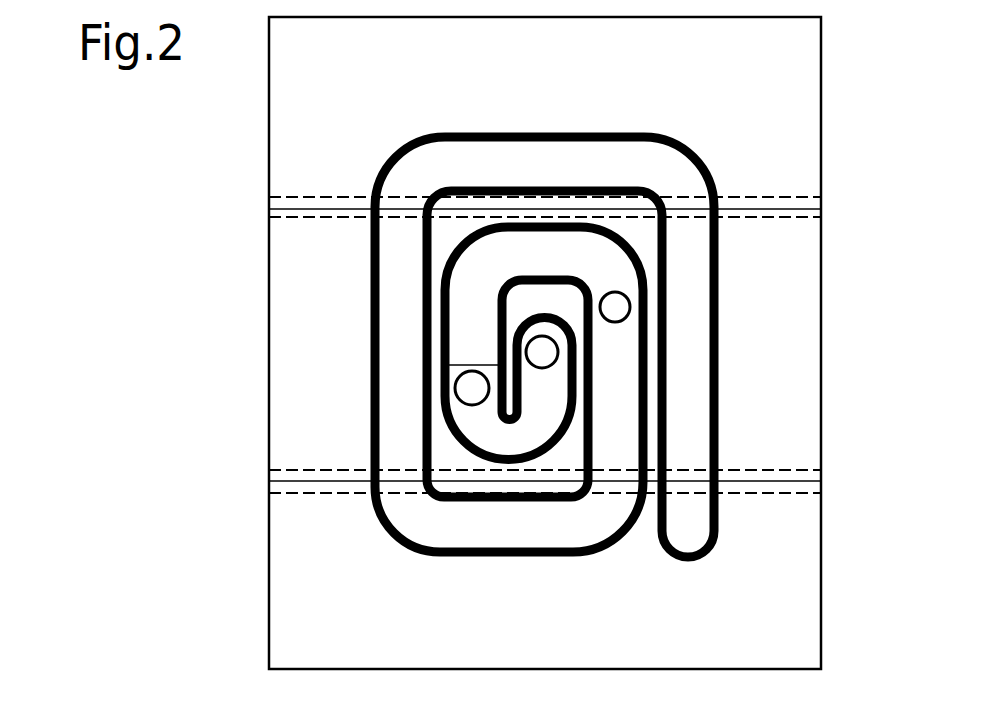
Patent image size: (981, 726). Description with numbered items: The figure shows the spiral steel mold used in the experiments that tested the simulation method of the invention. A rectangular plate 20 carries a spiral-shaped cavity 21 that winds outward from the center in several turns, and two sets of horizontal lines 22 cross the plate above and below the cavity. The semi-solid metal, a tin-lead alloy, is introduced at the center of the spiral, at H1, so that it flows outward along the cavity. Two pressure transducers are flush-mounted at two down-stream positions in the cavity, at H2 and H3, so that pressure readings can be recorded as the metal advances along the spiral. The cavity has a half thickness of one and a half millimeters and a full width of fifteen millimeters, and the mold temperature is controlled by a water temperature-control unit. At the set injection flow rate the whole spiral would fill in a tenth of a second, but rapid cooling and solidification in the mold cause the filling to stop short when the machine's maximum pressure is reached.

The substrate / chip 20 is at (823, 75).
The meander-shaped resistor track 21 is at (544, 347).
The scribe / cutting lines 22 is at (515, 334).
The center of the spiral H1 is at (543, 369).
The down-stream position in the cavity H2 is at (473, 403).
The down-stream position in the cavity H3 is at (616, 320).